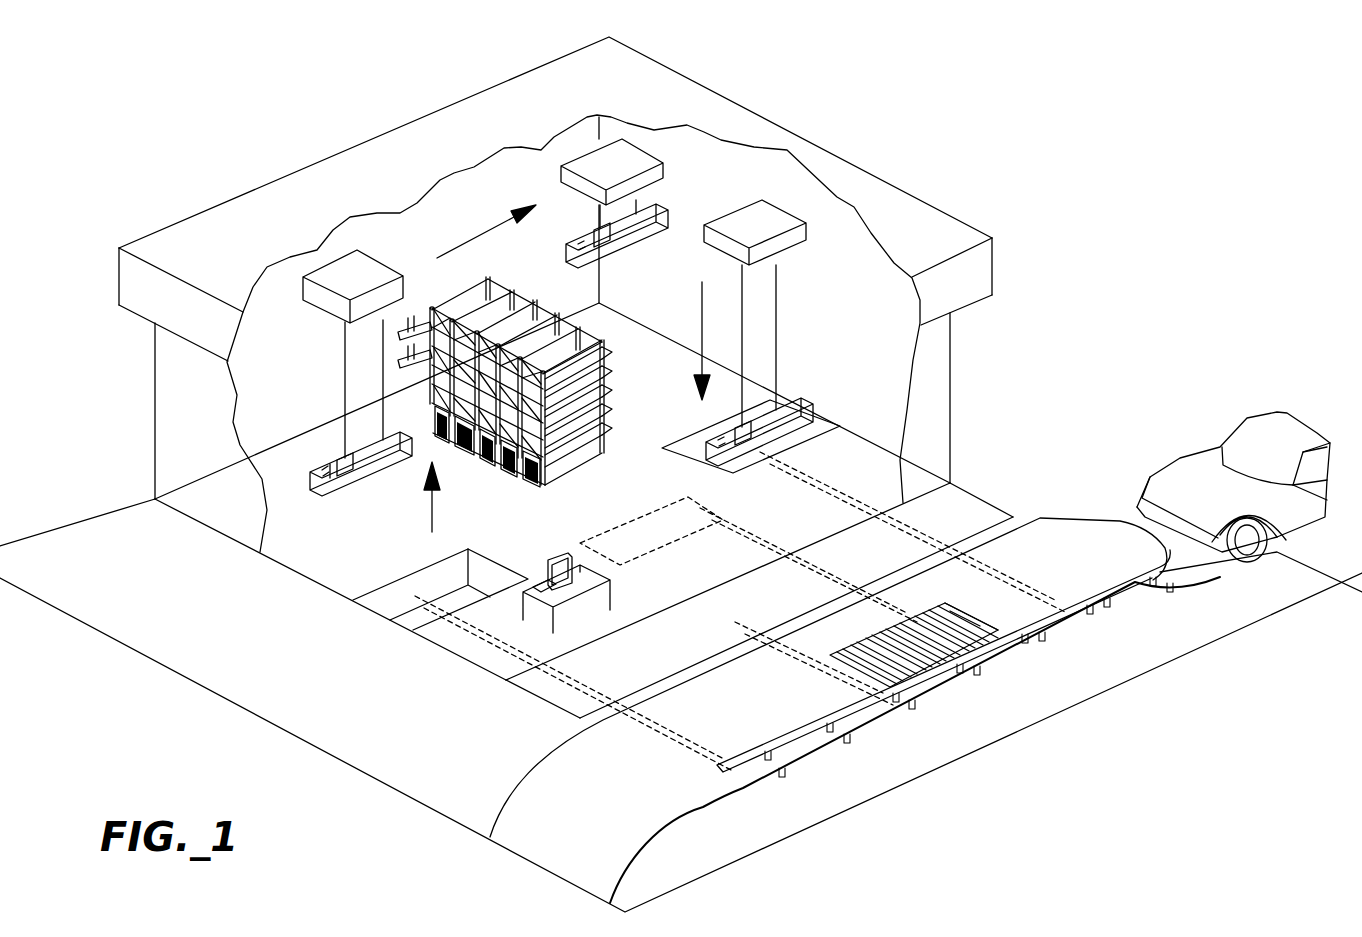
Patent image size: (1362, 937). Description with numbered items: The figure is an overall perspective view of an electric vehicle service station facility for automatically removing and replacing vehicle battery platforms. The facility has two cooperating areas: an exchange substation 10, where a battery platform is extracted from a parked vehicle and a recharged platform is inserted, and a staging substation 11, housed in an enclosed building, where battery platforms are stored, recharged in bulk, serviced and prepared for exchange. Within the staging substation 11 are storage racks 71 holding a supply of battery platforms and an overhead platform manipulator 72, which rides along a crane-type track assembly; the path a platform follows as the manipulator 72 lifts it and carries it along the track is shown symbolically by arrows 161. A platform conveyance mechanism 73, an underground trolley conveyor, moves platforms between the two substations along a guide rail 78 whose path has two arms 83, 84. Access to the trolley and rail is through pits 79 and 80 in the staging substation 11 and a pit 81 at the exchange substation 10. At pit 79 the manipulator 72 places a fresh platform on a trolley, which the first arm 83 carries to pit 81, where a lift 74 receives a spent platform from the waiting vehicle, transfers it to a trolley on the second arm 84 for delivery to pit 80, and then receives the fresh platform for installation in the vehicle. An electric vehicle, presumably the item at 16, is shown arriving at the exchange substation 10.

The exchange substation 10 is at (947, 508).
The staging substation 11 is at (701, 170).
The electric vehicle 16 is at (1160, 545).
The storage rack 71 is at (589, 322).
The platform manipulator 72 is at (348, 487).
The platform conveyance mechanism 73 is at (830, 506).
The lift 74 is at (880, 645).
The guide rail 78 is at (915, 538).
The first staging access pit 79 is at (692, 457).
The second staging pit 80 is at (480, 583).
The exchange substation access pit 81 is at (960, 627).
The first arm 83 is at (938, 532).
The second arm 84 is at (568, 700).
The arrows 161 is at (487, 230).